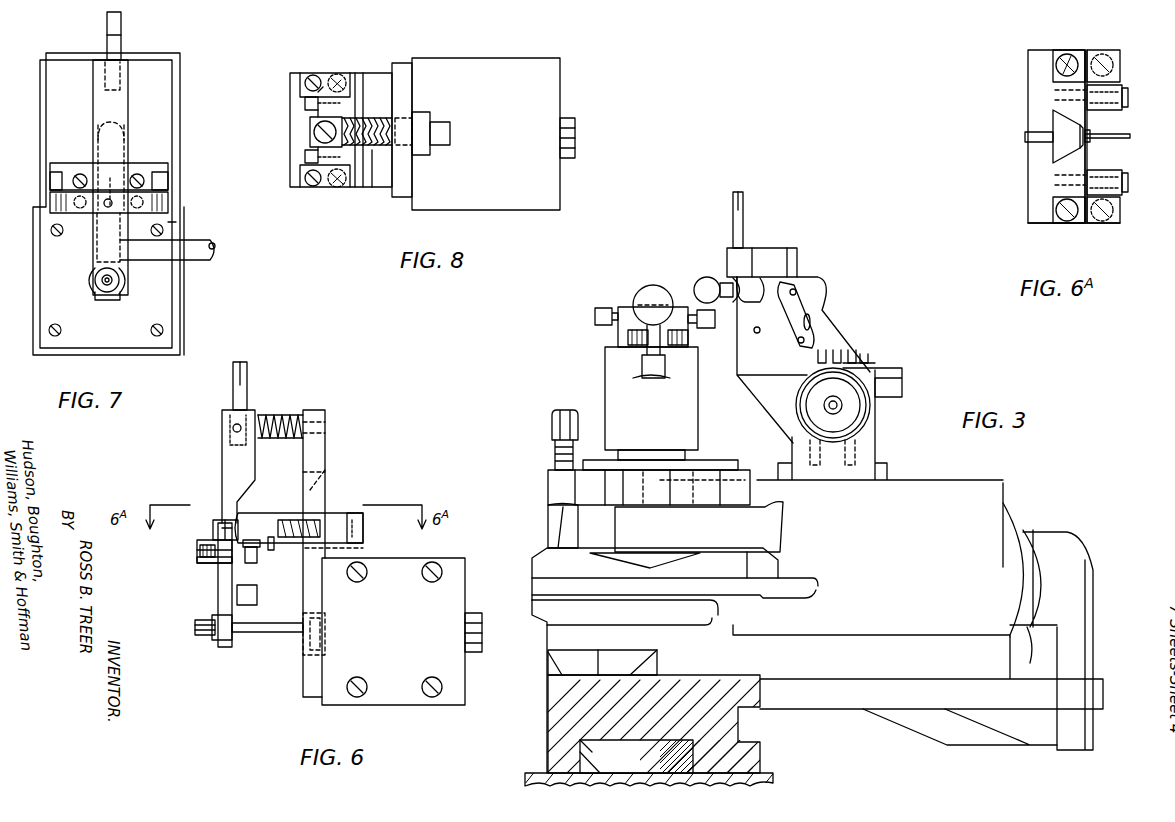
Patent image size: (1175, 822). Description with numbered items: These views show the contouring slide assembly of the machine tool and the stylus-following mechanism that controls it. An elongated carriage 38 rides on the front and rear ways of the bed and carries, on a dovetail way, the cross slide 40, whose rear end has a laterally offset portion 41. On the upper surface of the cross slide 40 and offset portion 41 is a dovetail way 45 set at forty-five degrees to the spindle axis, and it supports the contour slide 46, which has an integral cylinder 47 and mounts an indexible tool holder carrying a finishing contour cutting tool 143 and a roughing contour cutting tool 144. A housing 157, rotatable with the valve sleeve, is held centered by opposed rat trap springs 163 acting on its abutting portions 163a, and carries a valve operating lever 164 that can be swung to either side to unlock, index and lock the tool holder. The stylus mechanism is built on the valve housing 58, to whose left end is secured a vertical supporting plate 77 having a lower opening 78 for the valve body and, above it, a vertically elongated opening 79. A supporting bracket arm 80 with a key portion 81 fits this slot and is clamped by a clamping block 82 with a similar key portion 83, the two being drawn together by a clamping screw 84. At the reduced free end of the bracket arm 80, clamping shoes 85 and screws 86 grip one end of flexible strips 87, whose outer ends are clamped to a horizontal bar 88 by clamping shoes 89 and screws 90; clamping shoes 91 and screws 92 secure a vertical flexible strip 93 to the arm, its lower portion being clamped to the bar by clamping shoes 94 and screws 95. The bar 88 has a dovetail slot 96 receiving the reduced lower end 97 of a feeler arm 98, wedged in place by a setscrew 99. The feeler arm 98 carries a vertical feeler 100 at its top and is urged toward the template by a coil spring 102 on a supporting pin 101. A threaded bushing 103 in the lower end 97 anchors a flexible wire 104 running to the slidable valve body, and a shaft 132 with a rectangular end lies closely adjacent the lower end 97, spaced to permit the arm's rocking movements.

In FIG. 3, the carriage 38 is at (773, 776).
In FIG. 3, the cross slide 40 is at (548, 712).
In FIG. 3, the laterally offset portion 41 is at (860, 715).
In FIG. 3, the dovetail way 45 is at (650, 668).
In FIG. 3, the contour slide 46 is at (938, 660).
In FIG. 3, the cylinder 47 is at (960, 483).
In FIG. 8, the valve housing 58 is at (555, 178).
In FIG. 6, the valve housing 58 is at (465, 588).
In FIG. 7, the supporting plate 77 is at (167, 293).
In FIG. 8, the supporting plate 77 is at (412, 186).
In FIG. 6, the supporting plate 77 is at (332, 488).
In FIG. 3, the supporting plate 77 is at (797, 260).
In FIG. 6, the opening 78 is at (303, 650).
In FIG. 7, the vertically elongated opening 79 is at (133, 126).
In FIG. 6, the vertically elongated opening 79 is at (332, 460).
In FIG. 8, the supporting bracket arm 80 is at (372, 184).
In FIG. 6, the supporting bracket arm 80 is at (272, 545).
In FIG. 8, the key portion 81 is at (384, 163).
In FIG. 6, the key portion 81 is at (335, 505).
In FIG. 8, the clamping block 82 is at (420, 110).
In FIG. 8, the key portion 83 is at (403, 118).
In FIG. 6, the key portion 83 is at (363, 550).
In FIG. 8, the clamping screw 84 is at (450, 128).
In FIG. 6, the clamping screw 84 is at (365, 536).
In FIG. 6, the clamping shoes 85 is at (262, 548).
In FIG. 6, the screws 86 is at (248, 563).
In FIG. 7, the flexible strips 87 is at (57, 190).
In FIG. 8, the flexible strips 87 is at (352, 72).
In FIG. 6A, the flexible strips 87 is at (1088, 223).
In FIG. 6, the flexible strips 87 is at (197, 548).
In FIG. 7, the horizontal bar 88 is at (170, 200).
In FIG. 6A, the horizontal bar 88 is at (1040, 50).
In FIG. 6, the horizontal bar 88 is at (205, 565).
In FIG. 6A, the clamping shoes 89 is at (1065, 50).
In FIG. 6, the clamping shoes 89 is at (218, 528).
In FIG. 7, the screws 90 is at (50, 180).
In FIG. 8, the screws 90 is at (315, 76).
In FIG. 6A, the screws 90 is at (1080, 50).
In FIG. 6, the screws 90 is at (213, 524).
In FIG. 7, the clamping shoes 91 is at (80, 174).
In FIG. 7, the screws 92 is at (88, 170).
In FIG. 8, the flexible strip 93 is at (340, 106).
In FIG. 6A, the flexible strip 93 is at (1088, 122).
In FIG. 6, the flexible strip 93 is at (250, 515).
In FIG. 7, the clamping shoes 94 is at (175, 208).
In FIG. 6A, the clamping shoes 94 is at (1122, 88).
In FIG. 7, the screws 95 is at (175, 228).
In FIG. 6A, the screws 95 is at (1128, 185).
In FIG. 6A, the dovetail slot 96 is at (1053, 122).
In FIG. 6A, the reduced lower end 97 is at (1055, 108).
In FIG. 6, the reduced lower end 97 is at (218, 598).
In FIG. 8, the feeler arm 98 is at (310, 122).
In FIG. 6, the feeler arm 98 is at (248, 464).
In FIG. 7, the setscrew 99 is at (104, 206).
In FIG. 6A, the setscrew 99 is at (1025, 137).
In FIG. 6, the setscrew 99 is at (190, 556).
In FIG. 8, the feeler 100 is at (310, 140).
In FIG. 6, the feeler 100 is at (248, 395).
In FIG. 3, the feeler 100 is at (745, 225).
In FIG. 6, the supporting pin 101 is at (310, 406).
In FIG. 6, the coil spring 102 is at (292, 405).
In FIG. 6, the threaded bushing 103 is at (240, 640).
In FIG. 6A, the flexible wire 104 is at (1128, 133).
In FIG. 6, the flexible wire 104 is at (258, 632).
In FIG. 7, the shaft 132 is at (216, 247).
In FIG. 6, the shaft 132 is at (258, 598).
In FIG. 3, the finishing contour cutting tool 143 is at (548, 520).
In FIG. 3, the roughing contour cutting tool 144 is at (783, 532).
In FIG. 3, the housing 157 is at (690, 418).
In FIG. 3, the rat trap springs 163 is at (620, 348).
In FIG. 3, the abutting portions 163a is at (603, 338).
In FIG. 3, the valve operating lever 164 is at (660, 296).